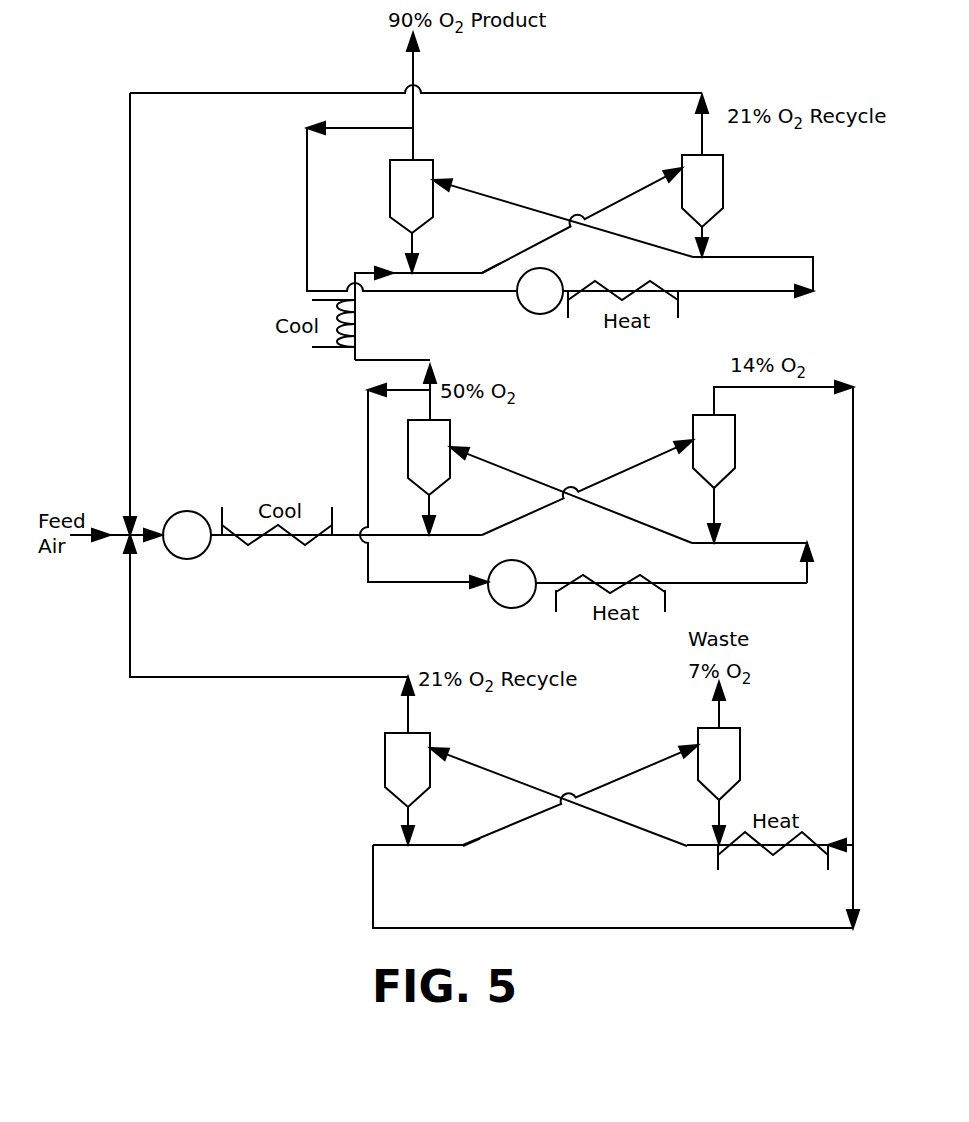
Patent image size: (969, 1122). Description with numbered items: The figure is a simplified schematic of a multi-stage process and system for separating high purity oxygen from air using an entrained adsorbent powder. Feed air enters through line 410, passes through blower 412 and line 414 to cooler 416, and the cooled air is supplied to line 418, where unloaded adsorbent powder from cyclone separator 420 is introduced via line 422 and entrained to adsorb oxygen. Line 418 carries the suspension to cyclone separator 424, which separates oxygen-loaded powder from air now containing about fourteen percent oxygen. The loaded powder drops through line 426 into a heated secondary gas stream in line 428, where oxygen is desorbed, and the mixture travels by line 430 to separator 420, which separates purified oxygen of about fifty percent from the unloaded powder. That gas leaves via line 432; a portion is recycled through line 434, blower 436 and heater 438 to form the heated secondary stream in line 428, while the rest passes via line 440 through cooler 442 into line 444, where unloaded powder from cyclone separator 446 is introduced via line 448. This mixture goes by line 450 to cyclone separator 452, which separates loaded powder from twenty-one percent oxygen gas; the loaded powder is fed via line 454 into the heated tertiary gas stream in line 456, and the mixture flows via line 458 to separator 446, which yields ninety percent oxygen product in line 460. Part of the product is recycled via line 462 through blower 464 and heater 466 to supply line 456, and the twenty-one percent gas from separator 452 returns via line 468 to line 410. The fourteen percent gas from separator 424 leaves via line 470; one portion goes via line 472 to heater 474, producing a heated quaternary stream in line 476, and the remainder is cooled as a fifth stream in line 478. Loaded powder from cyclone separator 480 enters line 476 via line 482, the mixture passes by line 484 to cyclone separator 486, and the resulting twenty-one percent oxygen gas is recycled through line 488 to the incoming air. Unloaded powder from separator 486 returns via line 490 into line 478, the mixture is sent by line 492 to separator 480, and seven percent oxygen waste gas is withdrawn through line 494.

The line 410 is at (120, 530).
The blower 412 is at (185, 510).
The line 414 is at (223, 540).
The cooler 416 is at (305, 548).
The line 418 is at (397, 536).
The cyclone separator 420 is at (450, 427).
The line 422 is at (432, 502).
The cyclone separator 424 is at (737, 430).
The line 426 is at (716, 500).
The line 428 is at (785, 543).
The line 430 is at (535, 480).
The line 432 is at (430, 418).
The line 434 is at (368, 420).
The blower 436 is at (524, 562).
The heater 438 is at (650, 580).
The line 440 is at (430, 362).
The cooler 442 is at (365, 297).
The line 444 is at (400, 268).
The cyclone separator 446 is at (433, 157).
The line 448 is at (418, 242).
The line 450 is at (515, 256).
The cyclone separator 452 is at (724, 170).
The line 454 is at (705, 236).
The line 456 is at (815, 275).
The line 458 is at (545, 200).
The line 460 is at (413, 137).
The line 462 is at (307, 153).
The blower 464 is at (557, 276).
The heater 466 is at (660, 305).
The line 468 is at (590, 93).
The line 470 is at (855, 458).
The line 472 is at (840, 843).
The heater 474 is at (768, 855).
The line 476 is at (725, 840).
The line 478 is at (855, 898).
The cyclone separator 480 is at (742, 742).
The line 482 is at (718, 808).
The line 484 is at (510, 778).
The cyclone separator 486 is at (385, 757).
The line 488 is at (315, 677).
The line 490 is at (405, 812).
The line 492 is at (520, 822).
The line 494 is at (720, 710).